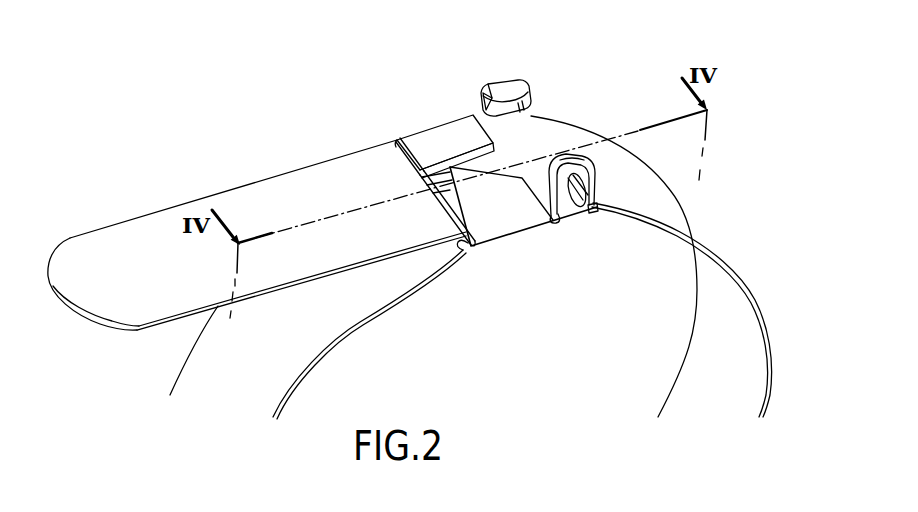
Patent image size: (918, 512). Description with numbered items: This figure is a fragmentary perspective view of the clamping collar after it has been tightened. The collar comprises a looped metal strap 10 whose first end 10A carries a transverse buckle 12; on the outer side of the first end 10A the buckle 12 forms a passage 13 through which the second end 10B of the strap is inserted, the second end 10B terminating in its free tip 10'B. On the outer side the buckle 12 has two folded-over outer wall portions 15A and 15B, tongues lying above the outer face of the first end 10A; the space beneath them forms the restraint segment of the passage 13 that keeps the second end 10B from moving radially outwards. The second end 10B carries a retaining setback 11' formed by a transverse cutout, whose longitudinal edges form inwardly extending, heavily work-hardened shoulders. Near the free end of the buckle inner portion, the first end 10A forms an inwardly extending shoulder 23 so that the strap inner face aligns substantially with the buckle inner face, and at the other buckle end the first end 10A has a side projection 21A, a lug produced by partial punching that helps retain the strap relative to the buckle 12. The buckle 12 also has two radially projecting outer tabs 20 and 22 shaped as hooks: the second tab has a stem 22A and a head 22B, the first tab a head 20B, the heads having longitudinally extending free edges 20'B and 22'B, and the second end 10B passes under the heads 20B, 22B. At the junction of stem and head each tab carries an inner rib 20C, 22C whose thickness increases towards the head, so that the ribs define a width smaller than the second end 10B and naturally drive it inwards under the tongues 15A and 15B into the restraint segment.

The strap 10 is at (434, 267).
The first end of the strap 10A is at (660, 219).
The second end of the strap 10B is at (158, 242).
The free tip of the second end of the strap 10'B is at (93, 305).
The retaining setback 11' is at (422, 192).
The buckle 12 is at (412, 118).
The passage 13 is at (508, 139).
The outer wall portion 15A is at (428, 150).
The outer wall portion 15B is at (473, 209).
The outer tab 20 is at (516, 66).
The head 20B is at (520, 97).
The free edge of the head 20'B is at (556, 98).
The inner rib 20C is at (485, 110).
The side projection 21A is at (596, 212).
The outer tab 22 is at (605, 175).
The stem 22A is at (592, 186).
The head 22B is at (574, 146).
The free edge of the head 22'B is at (523, 206).
The inner rib 22C is at (586, 210).
The shoulder 23 is at (463, 250).